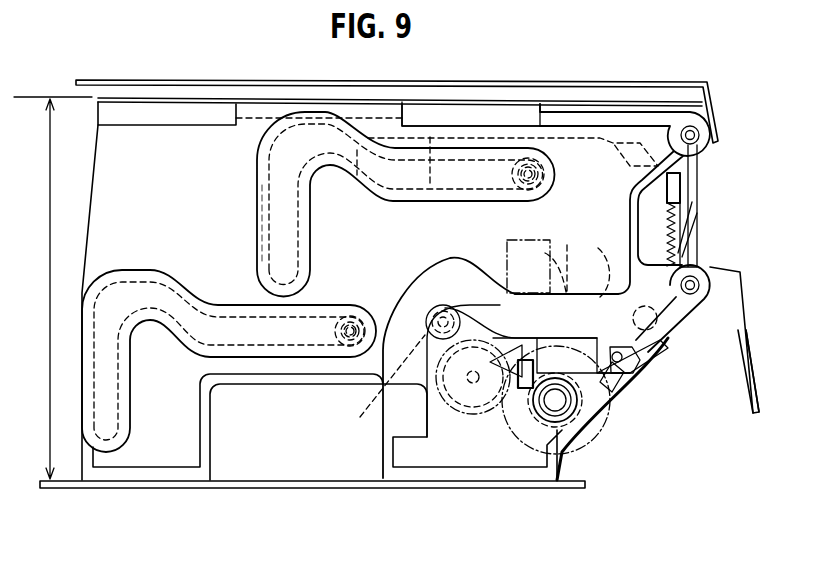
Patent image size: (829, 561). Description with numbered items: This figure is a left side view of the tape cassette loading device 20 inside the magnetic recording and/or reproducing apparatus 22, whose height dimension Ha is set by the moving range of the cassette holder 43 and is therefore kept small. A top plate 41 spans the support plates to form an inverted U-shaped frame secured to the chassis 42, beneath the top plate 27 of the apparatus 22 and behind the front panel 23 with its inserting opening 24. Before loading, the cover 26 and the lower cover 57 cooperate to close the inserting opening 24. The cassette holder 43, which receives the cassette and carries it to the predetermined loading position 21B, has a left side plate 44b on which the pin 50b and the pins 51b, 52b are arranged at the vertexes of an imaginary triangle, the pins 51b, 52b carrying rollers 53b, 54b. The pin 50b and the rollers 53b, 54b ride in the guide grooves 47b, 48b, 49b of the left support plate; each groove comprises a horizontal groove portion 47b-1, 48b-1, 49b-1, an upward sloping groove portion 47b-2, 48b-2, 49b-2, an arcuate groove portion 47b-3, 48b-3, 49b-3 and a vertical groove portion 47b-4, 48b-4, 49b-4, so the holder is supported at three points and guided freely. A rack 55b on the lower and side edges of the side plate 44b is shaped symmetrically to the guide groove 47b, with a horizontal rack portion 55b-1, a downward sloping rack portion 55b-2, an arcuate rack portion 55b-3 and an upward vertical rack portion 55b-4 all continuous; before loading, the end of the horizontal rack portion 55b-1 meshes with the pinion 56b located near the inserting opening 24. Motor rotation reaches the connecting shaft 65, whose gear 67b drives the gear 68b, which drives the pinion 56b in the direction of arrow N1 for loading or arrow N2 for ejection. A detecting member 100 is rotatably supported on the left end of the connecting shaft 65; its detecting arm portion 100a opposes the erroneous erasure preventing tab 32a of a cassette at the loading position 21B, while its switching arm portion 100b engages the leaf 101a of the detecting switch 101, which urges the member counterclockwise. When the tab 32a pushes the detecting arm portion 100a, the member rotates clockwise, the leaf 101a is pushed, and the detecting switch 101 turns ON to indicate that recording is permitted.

The tape cassette loading device 20 is at (624, 65).
The magnetic recording and/or reproducing apparatus 22 is at (659, 78).
The front panel 23 is at (756, 376).
The inserting opening 24 is at (735, 270).
The cover 26 is at (700, 170).
The top plate 27 is at (556, 80).
The top plate 41 is at (466, 98).
The chassis 42 is at (302, 490).
The cassette holder 43 is at (668, 189).
The left side plate 44b is at (578, 140).
The guide groove 47b is at (440, 257).
The horizontal groove portion 47b-1 is at (640, 373).
The sloping groove portion 47b-2 is at (488, 258).
The arcuate groove portion 47b-3 is at (437, 276).
The vertical groove portion 47b-4 is at (397, 408).
The guide groove 48b is at (408, 175).
The horizontal groove portion 48b-1 is at (497, 158).
The sloping groove portion 48b-2 is at (392, 160).
The arcuate groove portion 48b-3 is at (310, 135).
The vertical groove portion 48b-4 is at (282, 198).
The guide groove 49b is at (243, 345).
The horizontal groove portion 49b-1 is at (355, 280).
The sloping groove portion 49b-2 is at (203, 316).
The arcuate groove portion 49b-3 is at (137, 290).
The vertical groove portion 49b-4 is at (112, 366).
The pin 50b is at (645, 306).
The pin 51b is at (545, 174).
The pin 52b is at (363, 312).
The roller 53b is at (512, 178).
The roller 54b is at (334, 331).
The rack 55b is at (696, 238).
The horizontal rack portion 55b-1 is at (473, 377).
The sloping rack portion 55b-2 is at (603, 262).
The arcuate rack portion 55b-3 is at (660, 347).
The vertical rack portion 55b-4 is at (697, 204).
The pinion 56b is at (378, 406).
The lower cover 57 is at (694, 228).
The connecting shaft 65 is at (577, 457).
The gear 67b is at (600, 430).
The gear 68b is at (489, 450).
The detecting member 100 is at (564, 288).
The detecting arm portion 100a is at (534, 271).
The switching arm portion 100b is at (593, 407).
The detecting switch 101 is at (625, 386).
The leaf 101a is at (640, 380).
The predetermined loading position 21B is at (515, 240).
The erroneous erasure preventing tab 32a is at (560, 362).
The height dimension Ha is at (53, 288).
The arrow N1 is at (438, 311).
The arrow N2 is at (469, 365).